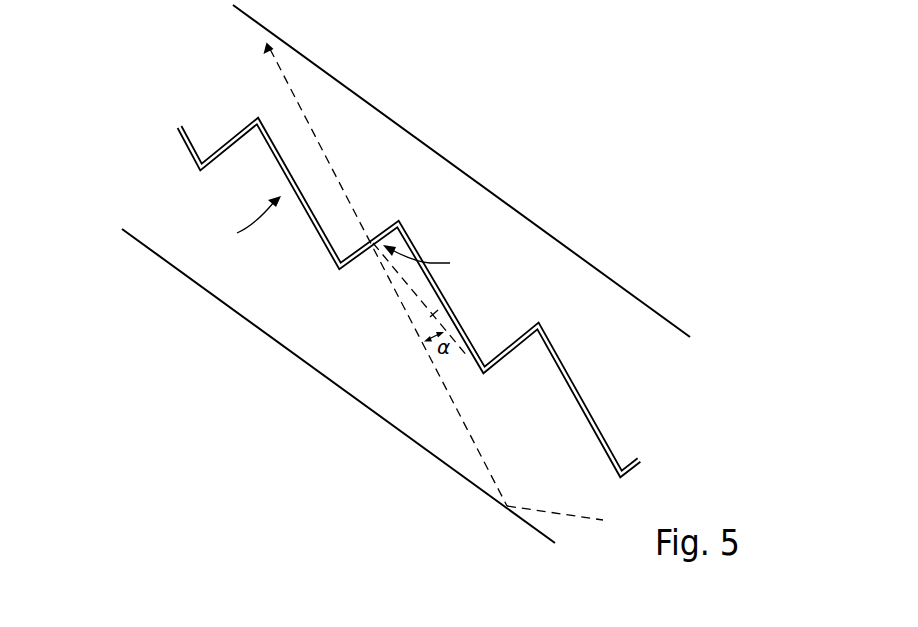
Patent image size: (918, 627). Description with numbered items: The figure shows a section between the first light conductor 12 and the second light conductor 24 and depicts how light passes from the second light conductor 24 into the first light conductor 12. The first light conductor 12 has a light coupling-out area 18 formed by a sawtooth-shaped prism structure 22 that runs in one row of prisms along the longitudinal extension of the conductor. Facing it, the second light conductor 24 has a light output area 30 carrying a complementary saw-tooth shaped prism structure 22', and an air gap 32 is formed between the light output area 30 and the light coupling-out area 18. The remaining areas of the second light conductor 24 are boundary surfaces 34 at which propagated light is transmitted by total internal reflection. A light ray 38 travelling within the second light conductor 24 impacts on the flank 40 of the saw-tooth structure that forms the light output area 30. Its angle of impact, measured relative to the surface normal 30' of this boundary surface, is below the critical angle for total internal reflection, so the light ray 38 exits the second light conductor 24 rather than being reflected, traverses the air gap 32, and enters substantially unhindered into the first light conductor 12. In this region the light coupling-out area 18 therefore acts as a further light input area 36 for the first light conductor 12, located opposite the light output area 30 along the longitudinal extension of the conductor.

The first light conductor 12 is at (532, 238).
The second light conductor 24 is at (322, 352).
The boundary surfaces 34 is at (411, 430).
The light coupling-out area 18 is at (383, 223).
The further light input area 36 is at (383, 223).
The light output area 30 is at (340, 265).
The prism structure 22 is at (386, 275).
The prism structure 22' is at (239, 221).
The surface normal 30' is at (446, 300).
The flank 40 is at (431, 261).
The air gap 32 is at (581, 394).
The light ray 38 is at (536, 514).